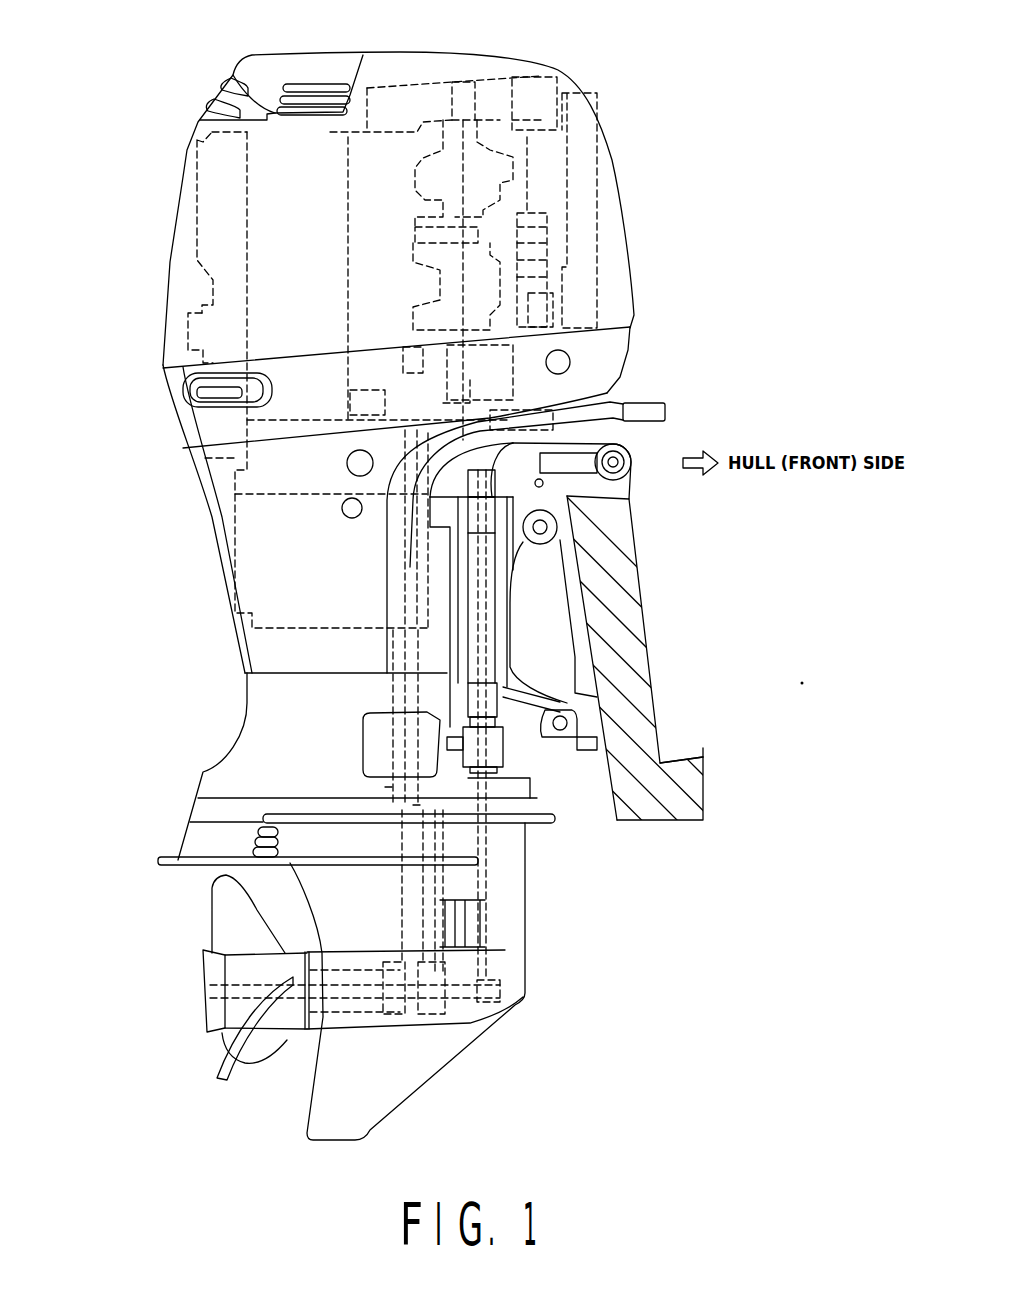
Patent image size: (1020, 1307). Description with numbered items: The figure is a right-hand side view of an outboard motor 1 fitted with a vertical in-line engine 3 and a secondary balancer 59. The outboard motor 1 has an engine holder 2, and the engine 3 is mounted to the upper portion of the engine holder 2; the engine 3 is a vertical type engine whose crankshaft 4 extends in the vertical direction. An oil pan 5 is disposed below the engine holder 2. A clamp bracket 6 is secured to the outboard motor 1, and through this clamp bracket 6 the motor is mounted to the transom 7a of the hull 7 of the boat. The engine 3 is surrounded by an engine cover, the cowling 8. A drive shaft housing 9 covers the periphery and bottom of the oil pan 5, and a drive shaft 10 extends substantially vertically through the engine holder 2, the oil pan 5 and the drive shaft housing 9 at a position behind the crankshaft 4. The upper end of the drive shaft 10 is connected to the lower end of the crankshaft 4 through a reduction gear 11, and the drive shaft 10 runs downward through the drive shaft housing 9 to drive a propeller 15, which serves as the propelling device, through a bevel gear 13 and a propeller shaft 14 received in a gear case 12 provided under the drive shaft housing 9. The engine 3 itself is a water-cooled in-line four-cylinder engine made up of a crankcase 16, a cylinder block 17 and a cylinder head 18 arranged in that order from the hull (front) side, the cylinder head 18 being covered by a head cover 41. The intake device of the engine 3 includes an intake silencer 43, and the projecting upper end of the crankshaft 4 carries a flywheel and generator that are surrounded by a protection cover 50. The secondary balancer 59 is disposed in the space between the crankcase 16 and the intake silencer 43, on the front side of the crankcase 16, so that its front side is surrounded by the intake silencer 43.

The outboard motor 1 is at (594, 57).
The engine holder 2 is at (233, 488).
The engine 3 is at (203, 290).
The crankshaft 4 is at (510, 214).
The oil pan 5 is at (233, 560).
The clamp bracket 6 is at (562, 657).
The hull 7 is at (657, 658).
The transom 7a is at (660, 810).
The cowling 8 is at (185, 173).
The drive shaft housing 9 is at (257, 715).
The drive shaft 10 is at (387, 567).
The reduction gear 11 is at (350, 397).
The gear case 12 is at (520, 937).
The bevel gear 13 is at (440, 1013).
The propeller shaft 14 is at (305, 1030).
The propeller 15 is at (225, 1075).
The crankcase 16 is at (508, 145).
The cylinder block 17 is at (385, 150).
The cylinder head 18 is at (298, 163).
The head cover 41 is at (197, 215).
The intake silencer 43 is at (597, 245).
The protection cover 50 is at (485, 87).
The secondary balancer 59 is at (565, 290).